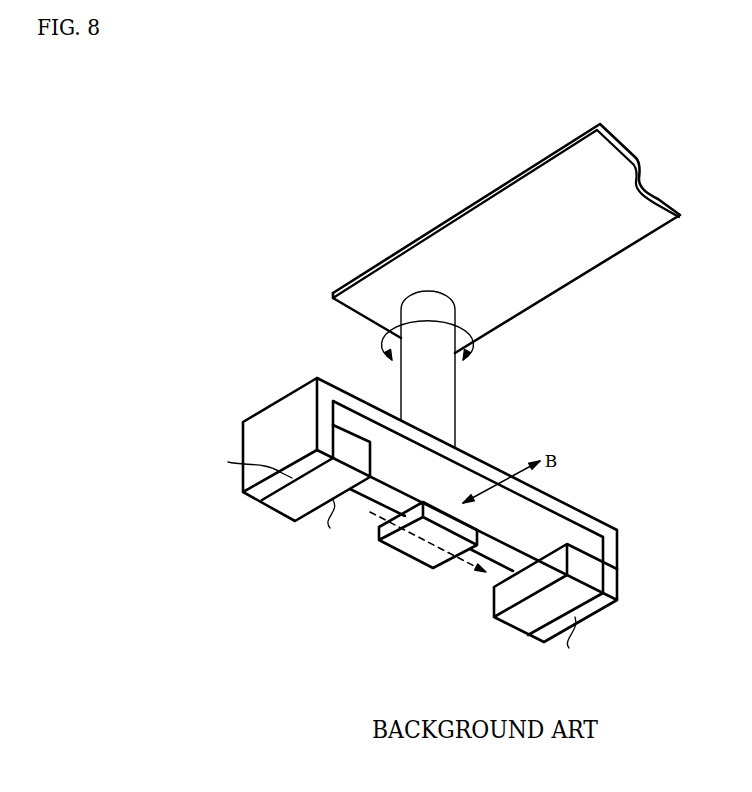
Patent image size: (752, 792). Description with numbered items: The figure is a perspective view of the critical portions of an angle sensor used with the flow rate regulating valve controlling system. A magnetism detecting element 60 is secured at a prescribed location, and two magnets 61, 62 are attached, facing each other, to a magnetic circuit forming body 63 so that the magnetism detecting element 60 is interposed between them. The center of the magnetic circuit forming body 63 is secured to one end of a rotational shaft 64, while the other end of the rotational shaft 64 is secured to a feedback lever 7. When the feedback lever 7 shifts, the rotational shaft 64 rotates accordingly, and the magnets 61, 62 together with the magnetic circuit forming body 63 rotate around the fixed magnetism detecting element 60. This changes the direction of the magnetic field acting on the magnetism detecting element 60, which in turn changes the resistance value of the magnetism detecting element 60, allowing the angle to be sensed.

The feedback lever 7 is at (527, 170).
The rotational shaft 64 is at (428, 290).
The magnetic circuit forming body 63 is at (483, 462).
The magnet 62 is at (351, 450).
The magnet 61 is at (591, 573).
The magnetism detecting element 60 is at (418, 551).